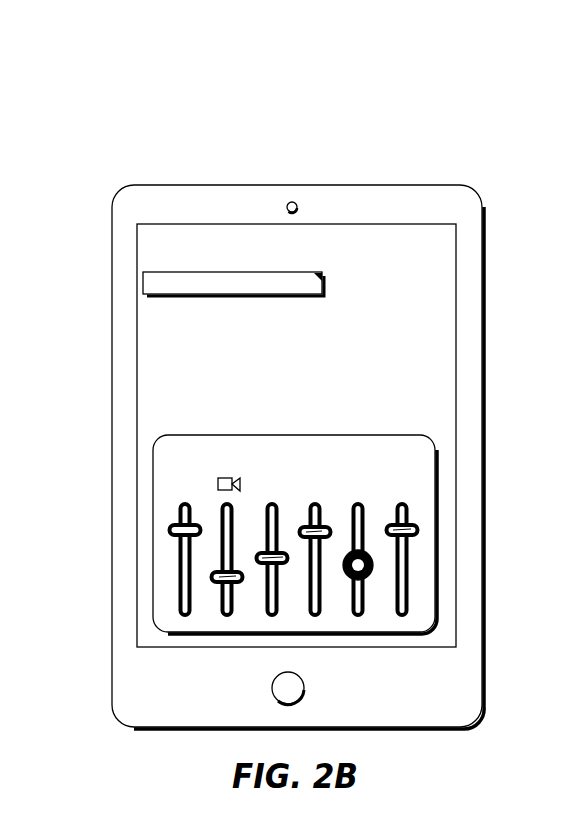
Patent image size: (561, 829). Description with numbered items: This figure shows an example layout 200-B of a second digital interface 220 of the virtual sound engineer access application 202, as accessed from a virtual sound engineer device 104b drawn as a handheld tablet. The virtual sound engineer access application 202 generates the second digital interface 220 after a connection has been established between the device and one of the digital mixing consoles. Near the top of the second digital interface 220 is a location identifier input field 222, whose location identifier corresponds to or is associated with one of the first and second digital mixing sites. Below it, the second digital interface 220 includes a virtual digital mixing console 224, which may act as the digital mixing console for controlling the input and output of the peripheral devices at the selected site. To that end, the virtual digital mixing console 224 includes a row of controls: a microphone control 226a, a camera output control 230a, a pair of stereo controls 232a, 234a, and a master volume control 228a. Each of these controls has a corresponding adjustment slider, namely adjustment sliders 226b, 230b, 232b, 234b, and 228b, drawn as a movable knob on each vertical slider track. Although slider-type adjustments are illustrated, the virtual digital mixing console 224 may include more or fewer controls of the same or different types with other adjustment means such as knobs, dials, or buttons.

The example layout 200-B is at (296, 127).
The virtual sound engineer device 104b is at (195, 183).
The second digital interface 220 is at (354, 237).
The virtual sound engineer access application 202 is at (150, 364).
The location identifier input field 222 is at (310, 278).
The virtual digital mixing console 224 is at (383, 452).
The microphone control 226a is at (183, 580).
The adjustment slider 226b is at (175, 530).
The camera output control 230a is at (228, 600).
The adjustment slider 230b is at (242, 585).
The stereo control 232a is at (272, 515).
The adjustment slider 232b is at (293, 580).
The stereo control 234a is at (317, 505).
The adjustment slider 234b is at (325, 528).
The master volume control 228a is at (400, 580).
The adjustment slider 228b is at (403, 530).